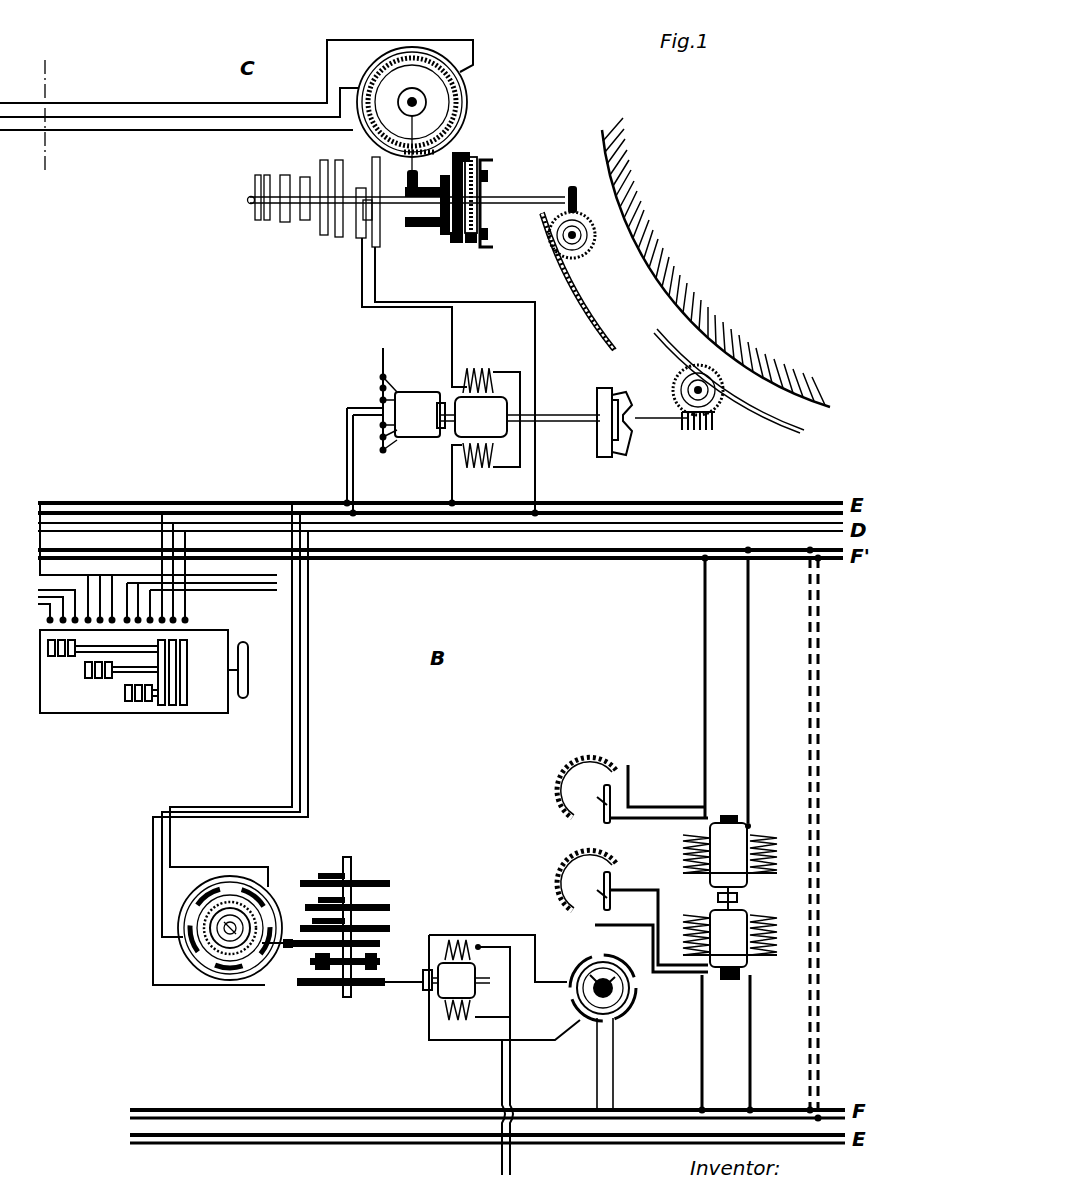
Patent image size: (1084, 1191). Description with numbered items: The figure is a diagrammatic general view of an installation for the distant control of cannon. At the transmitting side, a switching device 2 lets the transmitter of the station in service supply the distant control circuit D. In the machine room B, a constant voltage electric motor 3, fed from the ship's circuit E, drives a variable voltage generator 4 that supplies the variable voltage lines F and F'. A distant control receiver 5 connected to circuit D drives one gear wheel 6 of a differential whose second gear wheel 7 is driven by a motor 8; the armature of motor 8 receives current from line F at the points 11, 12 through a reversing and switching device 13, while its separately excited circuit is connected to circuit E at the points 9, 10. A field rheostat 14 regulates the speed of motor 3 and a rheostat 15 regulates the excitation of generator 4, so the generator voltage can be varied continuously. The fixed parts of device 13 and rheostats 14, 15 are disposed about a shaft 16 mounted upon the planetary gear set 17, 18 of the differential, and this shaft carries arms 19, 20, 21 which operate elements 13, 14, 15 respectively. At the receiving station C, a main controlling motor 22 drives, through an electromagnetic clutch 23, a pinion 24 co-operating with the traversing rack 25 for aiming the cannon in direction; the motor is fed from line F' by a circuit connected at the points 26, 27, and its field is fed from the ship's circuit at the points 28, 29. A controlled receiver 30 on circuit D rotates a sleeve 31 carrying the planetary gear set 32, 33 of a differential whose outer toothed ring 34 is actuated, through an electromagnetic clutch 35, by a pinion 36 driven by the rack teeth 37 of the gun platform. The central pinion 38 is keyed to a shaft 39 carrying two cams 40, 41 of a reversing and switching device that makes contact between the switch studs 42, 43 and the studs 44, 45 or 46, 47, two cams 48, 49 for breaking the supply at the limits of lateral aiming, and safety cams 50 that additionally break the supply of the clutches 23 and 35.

The switching device 2 is at (98, 702).
The electric motor 3 is at (735, 845).
The variable voltage generator 4 is at (730, 930).
The distant control receiver 5 is at (222, 970).
The gear wheel 6 is at (383, 945).
The gear wheel 7 is at (372, 986).
The motor 8 is at (478, 907).
The point 9 is at (502, 1165).
The point 10 is at (510, 1160).
The point 11 is at (592, 1102).
The point 12 is at (615, 1102).
The reversing and switching device 13 is at (383, 927).
The field rheostat 14 is at (383, 905).
The rheostat 15 is at (370, 882).
The shaft 16 is at (347, 857).
The planetary gear set 17 is at (310, 960).
The planetary gear set 18 is at (383, 970).
The arm 19 is at (313, 920).
The arm 20 is at (310, 897).
The arm 21 is at (317, 875).
The main controlling motor 22 is at (502, 410).
The electromagnetic clutch 23 is at (607, 450).
The pinion 24 is at (717, 377).
The traversing rack 25 is at (663, 297).
The point 26 is at (300, 545).
The point 27 is at (308, 532).
The point 28 is at (452, 497).
The point 29 is at (543, 500).
The controlled receiver 30 is at (413, 60).
The sleeve 31 is at (427, 227).
The planetary gear set 32 is at (467, 160).
The planetary gear set 33 is at (460, 247).
The outer toothed ring 34 is at (453, 247).
The electromagnetic clutch 35 is at (480, 240).
The pinion 36 is at (590, 215).
The rack teeth 37 is at (583, 293).
The central pinion 38 is at (467, 190).
The shaft 39 is at (250, 200).
The cam 40 is at (338, 237).
The cam 41 is at (325, 235).
The switch stud 42 is at (383, 390).
The switch stud 43 is at (383, 437).
The stud 44 is at (383, 348).
The stud 45 is at (400, 418).
The stud 46 is at (400, 395).
The stud 47 is at (385, 452).
The cam 48 is at (258, 220).
The cam 49 is at (268, 222).
The safety cam 50 is at (287, 222).